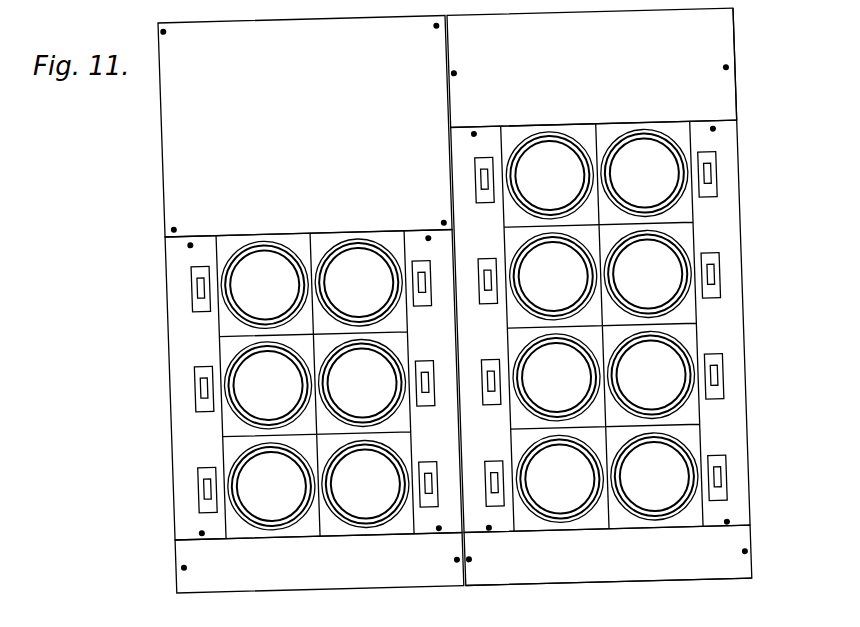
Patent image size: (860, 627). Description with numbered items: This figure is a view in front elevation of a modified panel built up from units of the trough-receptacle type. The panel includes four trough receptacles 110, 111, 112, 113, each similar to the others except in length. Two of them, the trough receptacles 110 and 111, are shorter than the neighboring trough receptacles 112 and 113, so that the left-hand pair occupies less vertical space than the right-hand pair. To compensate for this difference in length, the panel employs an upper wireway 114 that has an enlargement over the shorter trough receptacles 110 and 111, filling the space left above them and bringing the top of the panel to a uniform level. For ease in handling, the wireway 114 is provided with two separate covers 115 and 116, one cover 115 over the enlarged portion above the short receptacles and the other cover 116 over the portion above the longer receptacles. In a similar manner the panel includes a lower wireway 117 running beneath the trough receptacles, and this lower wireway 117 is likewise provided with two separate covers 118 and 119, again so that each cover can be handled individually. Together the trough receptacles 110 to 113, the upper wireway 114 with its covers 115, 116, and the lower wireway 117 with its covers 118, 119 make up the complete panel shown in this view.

The trough receptacle 110 is at (178, 348).
The trough receptacle 111 is at (391, 246).
The trough receptacle 112 is at (575, 128).
The trough receptacle 113 is at (674, 128).
The wireway 114 is at (718, 22).
The cover 115 is at (177, 100).
The cover 116 is at (728, 50).
The lower wireway 117 is at (647, 573).
The cover 118 is at (420, 582).
The cover 119 is at (683, 572).